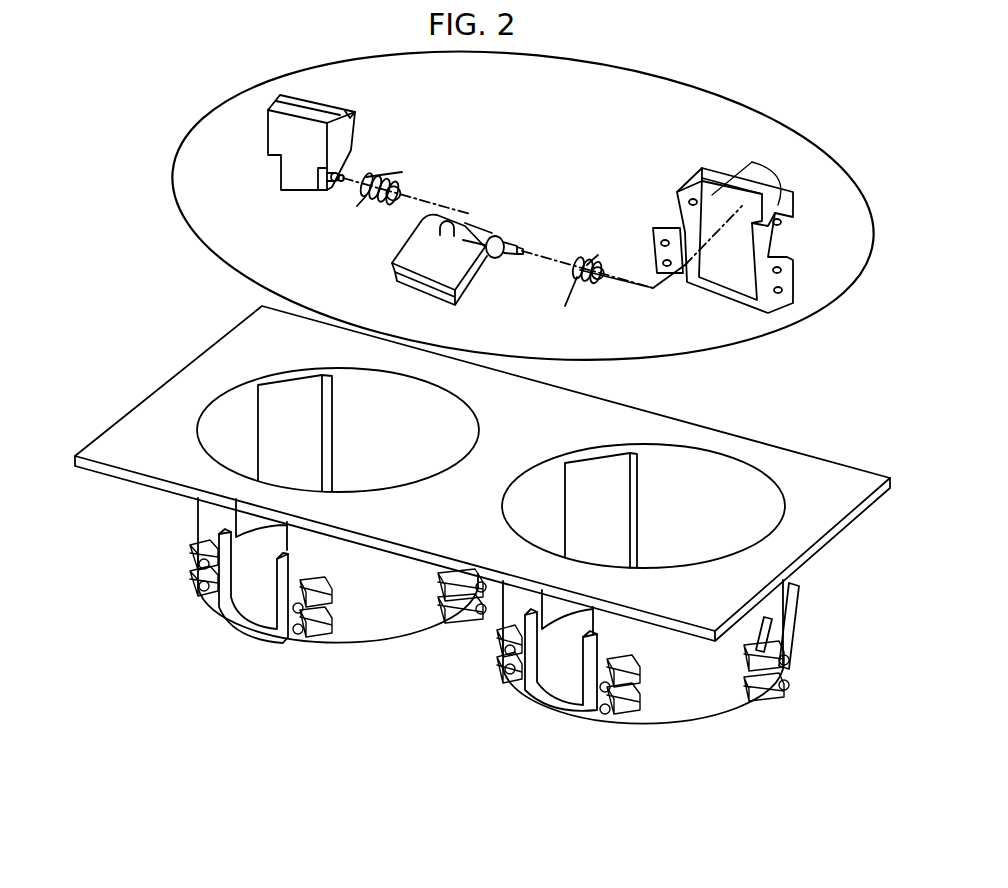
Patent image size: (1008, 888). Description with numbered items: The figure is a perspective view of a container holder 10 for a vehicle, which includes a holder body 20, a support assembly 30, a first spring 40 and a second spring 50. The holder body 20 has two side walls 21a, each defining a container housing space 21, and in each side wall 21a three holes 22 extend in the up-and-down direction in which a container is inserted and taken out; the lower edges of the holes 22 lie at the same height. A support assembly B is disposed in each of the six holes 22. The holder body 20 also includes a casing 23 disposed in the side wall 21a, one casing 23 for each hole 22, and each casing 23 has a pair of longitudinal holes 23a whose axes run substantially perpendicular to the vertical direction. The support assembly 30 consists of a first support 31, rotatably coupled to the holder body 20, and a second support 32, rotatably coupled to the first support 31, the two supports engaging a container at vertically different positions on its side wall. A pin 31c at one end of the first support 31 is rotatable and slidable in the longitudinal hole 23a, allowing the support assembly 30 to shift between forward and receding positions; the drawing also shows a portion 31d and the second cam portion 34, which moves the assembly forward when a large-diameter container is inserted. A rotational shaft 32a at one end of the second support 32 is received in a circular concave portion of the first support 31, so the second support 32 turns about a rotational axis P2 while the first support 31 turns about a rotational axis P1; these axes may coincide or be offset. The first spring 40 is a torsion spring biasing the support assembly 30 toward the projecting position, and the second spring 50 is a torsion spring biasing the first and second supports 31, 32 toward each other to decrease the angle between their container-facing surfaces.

The container holder 10 is at (126, 400).
The holder body 20 is at (815, 472).
The container housing space 21 is at (252, 430).
The side wall 21a is at (370, 597).
The hole 22 is at (292, 429).
The casing 23 is at (773, 240).
The longitudinal hole 23a is at (755, 164).
The support assembly 30 is at (465, 278).
The first support 31 is at (477, 270).
The pin 31c is at (497, 240).
The bore 31d is at (450, 228).
The second support 32 is at (318, 100).
The rotational shaft 32a is at (338, 172).
The second cam portion 34 is at (500, 258).
The first spring 40 is at (587, 260).
The second spring 50 is at (363, 201).
The rotational axis of the first support P1 is at (620, 281).
The rotational axis of the second support P2 is at (433, 195).
The support assembly B is at (280, 450).